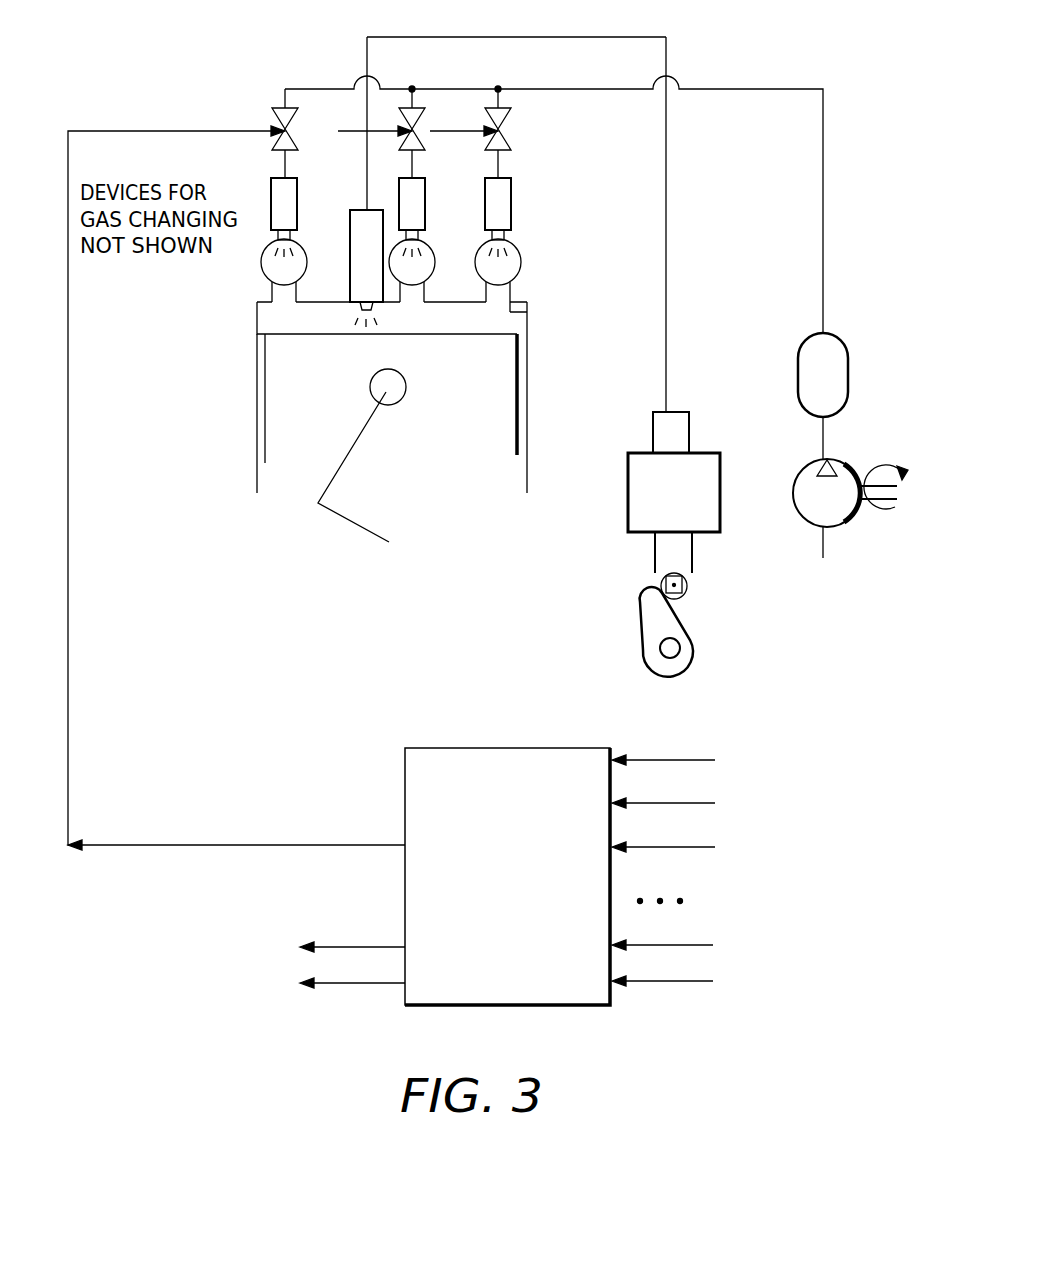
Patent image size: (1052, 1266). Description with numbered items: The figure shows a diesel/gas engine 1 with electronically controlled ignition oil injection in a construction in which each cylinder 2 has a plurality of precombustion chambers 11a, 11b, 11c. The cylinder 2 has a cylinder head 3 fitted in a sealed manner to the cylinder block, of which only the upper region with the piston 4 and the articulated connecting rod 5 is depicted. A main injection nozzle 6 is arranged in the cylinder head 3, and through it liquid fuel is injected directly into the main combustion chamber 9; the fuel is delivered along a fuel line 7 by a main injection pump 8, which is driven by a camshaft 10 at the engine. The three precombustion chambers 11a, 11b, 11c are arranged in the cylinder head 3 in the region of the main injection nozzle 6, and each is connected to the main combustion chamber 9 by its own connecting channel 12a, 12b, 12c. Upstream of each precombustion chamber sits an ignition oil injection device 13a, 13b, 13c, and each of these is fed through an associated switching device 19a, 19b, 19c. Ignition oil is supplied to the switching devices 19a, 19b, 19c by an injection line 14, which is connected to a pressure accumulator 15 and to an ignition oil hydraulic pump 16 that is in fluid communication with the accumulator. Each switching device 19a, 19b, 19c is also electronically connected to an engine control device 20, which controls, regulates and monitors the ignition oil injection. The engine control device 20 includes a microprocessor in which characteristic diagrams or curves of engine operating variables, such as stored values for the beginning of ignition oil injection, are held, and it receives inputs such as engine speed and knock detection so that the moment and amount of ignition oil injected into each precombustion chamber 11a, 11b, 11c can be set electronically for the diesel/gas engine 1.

The diesel/gas engine 1 is at (277, 645).
The cylinder 2 is at (257, 413).
The cylinder head 3 is at (610, 317).
The piston 4 is at (455, 414).
The articulated connecting rod 5 is at (357, 437).
The main injection nozzle 6 is at (360, 287).
The fuel line 7 is at (666, 47).
The main injection pump 8 is at (712, 477).
The main combustion chamber 9 is at (515, 317).
The camshaft 10 is at (678, 642).
The precombustion chamber 11a is at (303, 258).
The precombustion chamber 11b is at (433, 258).
The precombustion chamber 11c is at (518, 257).
The connecting channel 12a is at (280, 297).
The connecting channel 12b is at (417, 296).
The connecting channel 12c is at (501, 296).
The ignition oil injection device 13a is at (272, 192).
The ignition oil injection device 13b is at (432, 202).
The ignition oil injection device 13c is at (512, 190).
The injection line 14 is at (821, 137).
The pressure accumulator 15 is at (840, 357).
The ignition oil hydraulic pump 16 is at (843, 480).
The switching device 19a is at (283, 122).
The switching device 19b is at (403, 108).
The switching device 19c is at (513, 116).
The engine control device 20 is at (514, 950).